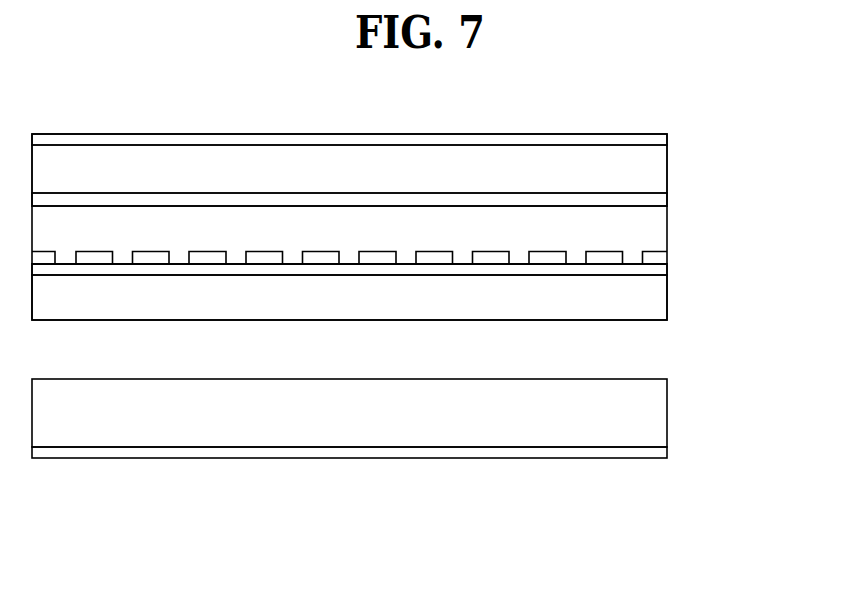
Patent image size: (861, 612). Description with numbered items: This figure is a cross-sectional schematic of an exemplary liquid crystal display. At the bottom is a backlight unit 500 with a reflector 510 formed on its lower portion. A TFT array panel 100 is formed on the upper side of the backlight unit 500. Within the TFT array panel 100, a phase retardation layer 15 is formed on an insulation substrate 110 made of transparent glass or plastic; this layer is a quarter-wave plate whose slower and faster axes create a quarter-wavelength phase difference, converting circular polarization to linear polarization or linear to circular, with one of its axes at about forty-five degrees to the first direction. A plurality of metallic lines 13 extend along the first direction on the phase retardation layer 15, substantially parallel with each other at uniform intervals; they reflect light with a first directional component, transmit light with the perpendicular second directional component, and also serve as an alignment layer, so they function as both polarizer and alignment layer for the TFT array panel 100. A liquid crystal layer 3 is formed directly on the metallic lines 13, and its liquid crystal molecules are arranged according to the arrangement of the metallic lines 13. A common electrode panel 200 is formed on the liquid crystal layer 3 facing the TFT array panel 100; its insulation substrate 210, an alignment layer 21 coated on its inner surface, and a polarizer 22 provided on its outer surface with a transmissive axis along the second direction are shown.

The polarizer 22 is at (667, 139).
The insulation substrate 210 is at (667, 168).
The alignment layer 21 is at (667, 198).
The common electrode panel 200 is at (740, 132).
The liquid crystal layer 3 is at (667, 222).
The metallic lines 13 is at (667, 257).
The phase retardation layer 15 is at (667, 275).
The insulation substrate 110 is at (667, 311).
The TFT array panel 100 is at (740, 248).
The backlight unit 500 is at (667, 412).
The reflector 510 is at (667, 451).